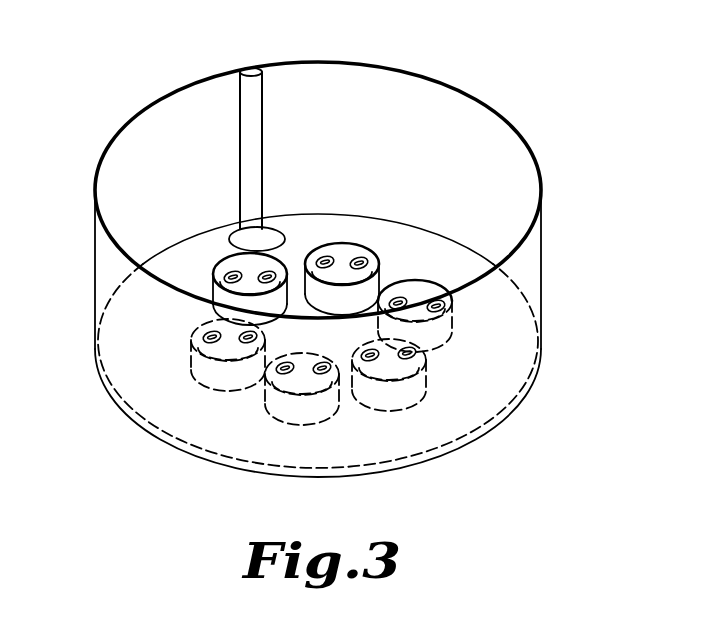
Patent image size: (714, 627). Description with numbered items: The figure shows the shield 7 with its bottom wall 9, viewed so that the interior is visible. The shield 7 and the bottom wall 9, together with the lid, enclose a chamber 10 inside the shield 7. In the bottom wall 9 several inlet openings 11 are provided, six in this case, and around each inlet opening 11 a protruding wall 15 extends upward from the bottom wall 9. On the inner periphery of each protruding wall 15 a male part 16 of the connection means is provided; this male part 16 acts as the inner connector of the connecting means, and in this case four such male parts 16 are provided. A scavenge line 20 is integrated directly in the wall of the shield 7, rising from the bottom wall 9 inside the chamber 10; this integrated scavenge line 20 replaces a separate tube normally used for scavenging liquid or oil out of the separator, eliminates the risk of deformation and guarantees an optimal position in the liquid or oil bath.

The shield 7 is at (320, 108).
The bottom wall 9 is at (193, 260).
The chamber 10 is at (307, 168).
The inlet opening 11 is at (243, 257).
The protruding wall 15 is at (150, 272).
The male part 16 is at (233, 272).
The scavenge line 20 is at (250, 98).